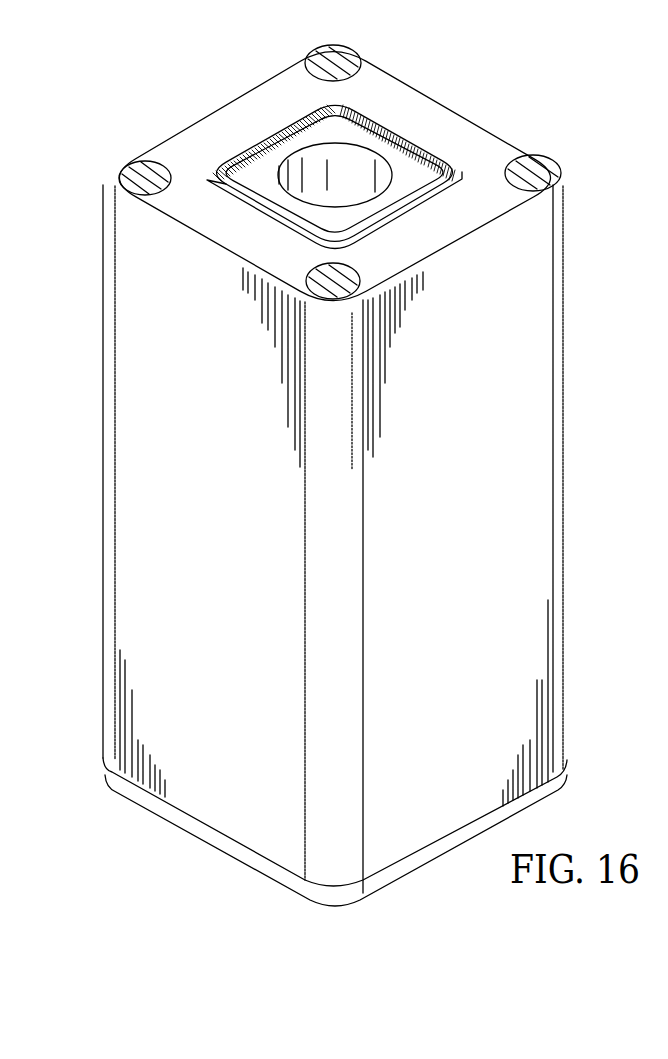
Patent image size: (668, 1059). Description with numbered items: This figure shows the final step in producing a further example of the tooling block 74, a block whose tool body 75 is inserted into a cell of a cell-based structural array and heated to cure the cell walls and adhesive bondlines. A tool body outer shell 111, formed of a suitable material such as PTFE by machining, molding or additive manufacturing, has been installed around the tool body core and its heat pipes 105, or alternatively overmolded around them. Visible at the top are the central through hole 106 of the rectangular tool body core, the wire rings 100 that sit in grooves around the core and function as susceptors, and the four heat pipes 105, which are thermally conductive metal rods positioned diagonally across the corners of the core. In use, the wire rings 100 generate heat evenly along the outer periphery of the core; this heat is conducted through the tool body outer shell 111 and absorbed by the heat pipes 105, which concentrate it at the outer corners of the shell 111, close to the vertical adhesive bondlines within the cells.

The tooling block 74 is at (198, 83).
The tool body 75 is at (482, 128).
The wire rings 100 is at (417, 148).
The heat pipes 105 is at (152, 162).
The central through hole 106 is at (357, 158).
The tool body outer shell 111 is at (568, 462).